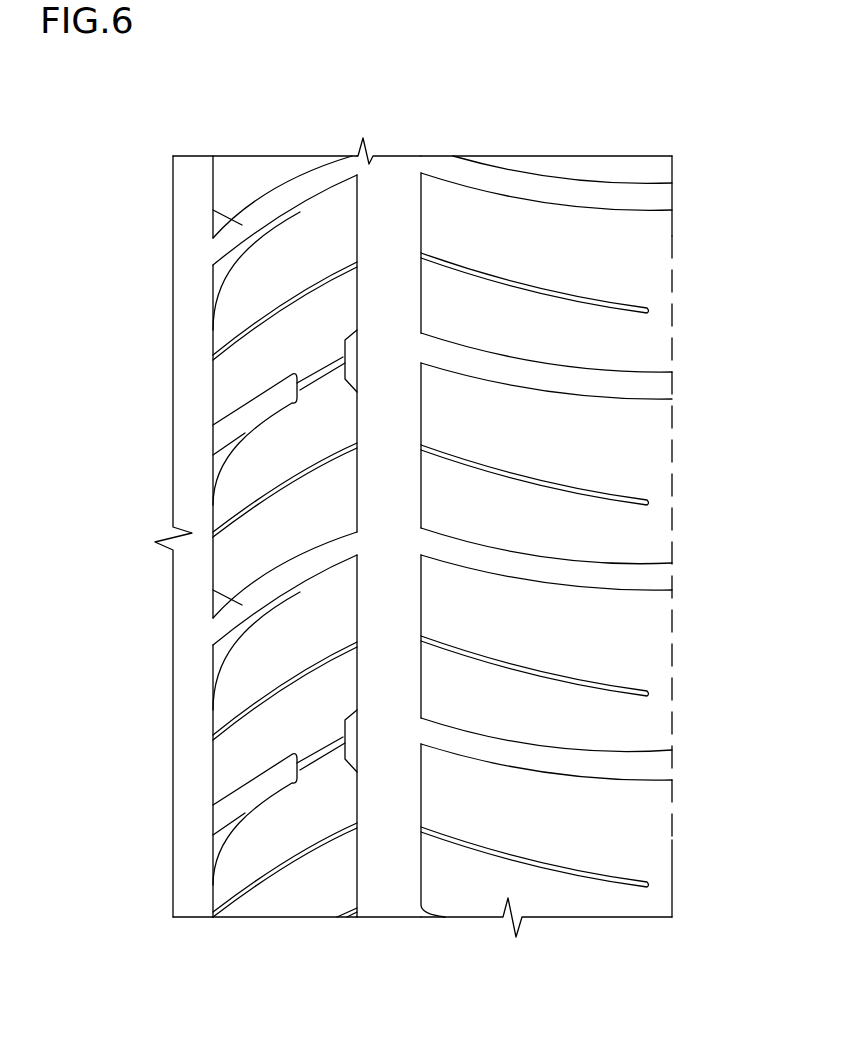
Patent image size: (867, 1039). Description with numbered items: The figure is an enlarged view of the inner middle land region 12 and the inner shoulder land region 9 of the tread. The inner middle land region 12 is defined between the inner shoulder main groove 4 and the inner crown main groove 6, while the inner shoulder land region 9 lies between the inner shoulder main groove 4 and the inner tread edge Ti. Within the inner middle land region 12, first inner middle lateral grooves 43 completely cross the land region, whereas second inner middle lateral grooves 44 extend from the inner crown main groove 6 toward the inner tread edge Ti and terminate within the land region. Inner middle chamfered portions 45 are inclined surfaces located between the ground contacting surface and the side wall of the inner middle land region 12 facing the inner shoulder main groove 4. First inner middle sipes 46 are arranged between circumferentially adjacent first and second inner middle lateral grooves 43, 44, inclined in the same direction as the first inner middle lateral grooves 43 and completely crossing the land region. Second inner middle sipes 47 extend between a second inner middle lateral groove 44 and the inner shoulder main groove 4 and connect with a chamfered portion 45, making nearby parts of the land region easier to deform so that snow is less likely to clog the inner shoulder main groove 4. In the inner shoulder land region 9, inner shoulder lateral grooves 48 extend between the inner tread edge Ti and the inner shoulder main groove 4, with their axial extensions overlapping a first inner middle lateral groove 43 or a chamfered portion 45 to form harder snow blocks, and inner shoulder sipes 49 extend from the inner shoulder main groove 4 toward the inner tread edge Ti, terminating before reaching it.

The inner shoulder main groove 4 is at (390, 205).
The inner crown main groove 6 is at (191, 186).
The inner shoulder land region 9 is at (507, 222).
The inner middle land region 12 is at (288, 243).
The first inner middle lateral groove 43 is at (252, 224).
The second inner middle lateral groove 44 is at (265, 405).
The inner middle chamfered portion 45 is at (352, 358).
The first inner middle sipe 46 is at (292, 475).
The second inner middle sipe 47 is at (317, 372).
The inner shoulder lateral groove 48 is at (568, 384).
The inner shoulder sipe 49 is at (527, 474).
The inner tread edge Ti is at (673, 172).